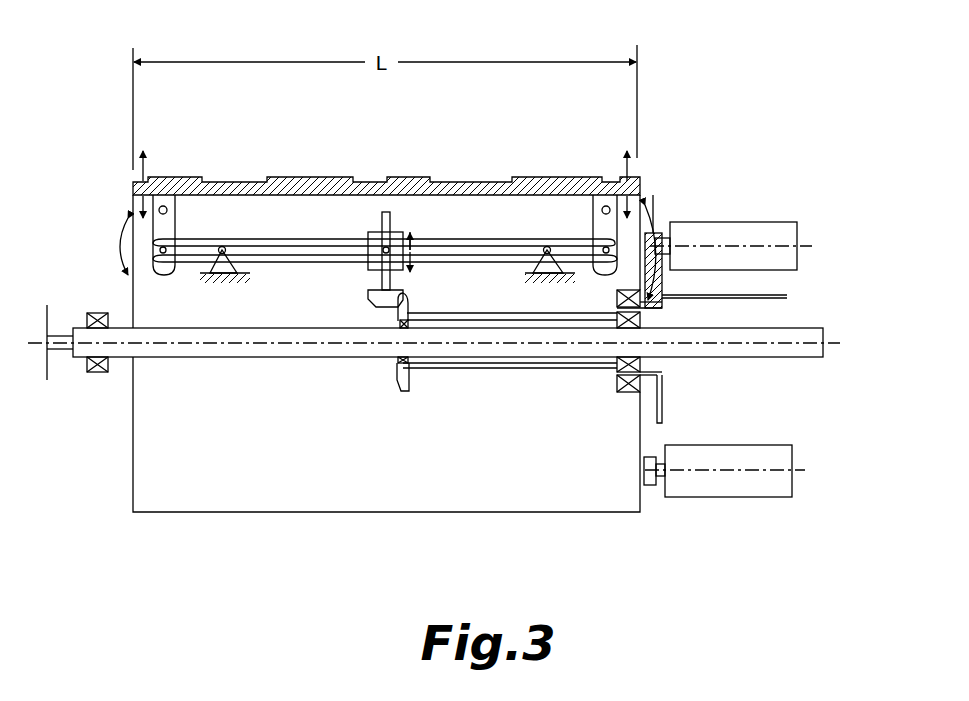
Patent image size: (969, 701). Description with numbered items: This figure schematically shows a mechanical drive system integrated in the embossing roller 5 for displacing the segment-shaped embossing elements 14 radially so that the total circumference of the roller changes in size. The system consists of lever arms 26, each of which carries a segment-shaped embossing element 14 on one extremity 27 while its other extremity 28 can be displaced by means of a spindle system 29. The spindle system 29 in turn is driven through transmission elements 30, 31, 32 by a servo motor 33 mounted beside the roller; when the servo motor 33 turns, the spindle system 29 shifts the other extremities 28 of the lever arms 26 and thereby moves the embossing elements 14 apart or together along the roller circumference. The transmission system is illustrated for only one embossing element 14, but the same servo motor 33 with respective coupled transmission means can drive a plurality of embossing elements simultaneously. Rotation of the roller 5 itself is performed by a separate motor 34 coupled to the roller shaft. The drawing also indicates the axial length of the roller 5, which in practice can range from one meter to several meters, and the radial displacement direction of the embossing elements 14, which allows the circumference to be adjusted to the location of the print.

The roller 5 is at (648, 167).
The segment-shaped embossing element 14 is at (258, 190).
The lever arm 26 is at (300, 249).
The extremity 27 is at (178, 242).
The other extremity 28 is at (448, 249).
The spindle system 29 is at (371, 226).
The transmission element 30 is at (408, 297).
The transmission element 31 is at (477, 368).
The transmission element 32 is at (787, 296).
The servo motor 33 is at (770, 236).
The motor 34 is at (755, 459).